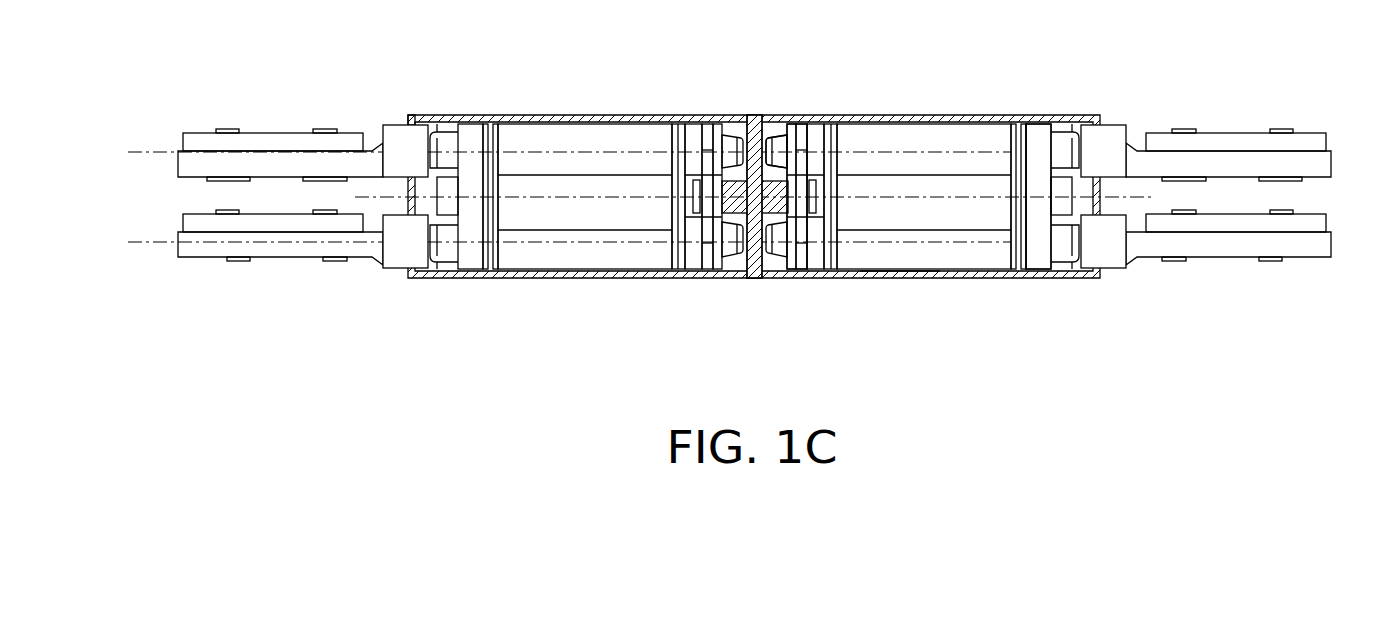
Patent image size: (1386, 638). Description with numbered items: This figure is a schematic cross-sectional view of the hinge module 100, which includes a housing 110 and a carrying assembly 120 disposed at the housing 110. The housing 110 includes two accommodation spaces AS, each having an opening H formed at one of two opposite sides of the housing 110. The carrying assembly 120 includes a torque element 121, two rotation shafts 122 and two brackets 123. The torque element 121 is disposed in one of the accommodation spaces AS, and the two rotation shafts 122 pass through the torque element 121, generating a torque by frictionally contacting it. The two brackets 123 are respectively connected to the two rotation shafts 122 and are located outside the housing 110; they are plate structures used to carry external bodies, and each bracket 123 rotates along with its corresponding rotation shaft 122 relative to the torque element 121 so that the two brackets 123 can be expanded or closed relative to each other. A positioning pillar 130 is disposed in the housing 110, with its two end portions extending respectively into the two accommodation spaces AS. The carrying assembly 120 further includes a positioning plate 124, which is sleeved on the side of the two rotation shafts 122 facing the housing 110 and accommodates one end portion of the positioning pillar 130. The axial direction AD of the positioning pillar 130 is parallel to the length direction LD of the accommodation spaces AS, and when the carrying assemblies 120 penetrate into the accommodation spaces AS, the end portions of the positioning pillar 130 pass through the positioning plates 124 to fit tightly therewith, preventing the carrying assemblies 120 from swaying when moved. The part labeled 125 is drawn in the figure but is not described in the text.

The hinge module 100 is at (735, 208).
The housing 110 is at (583, 115).
The carrying assembly 120 is at (332, 103).
The torque element 121 is at (968, 213).
The rotation shaft 122 is at (772, 142).
The bracket 123 is at (1223, 140).
The positioning plate 124 is at (794, 157).
The end plate 125 is at (1040, 221).
The positioning pillar 130 is at (757, 279).
The opening H is at (411, 118).
The accommodation space AS is at (901, 274).
The axial direction AD is at (105, 196).
The length direction LD is at (755, 196).